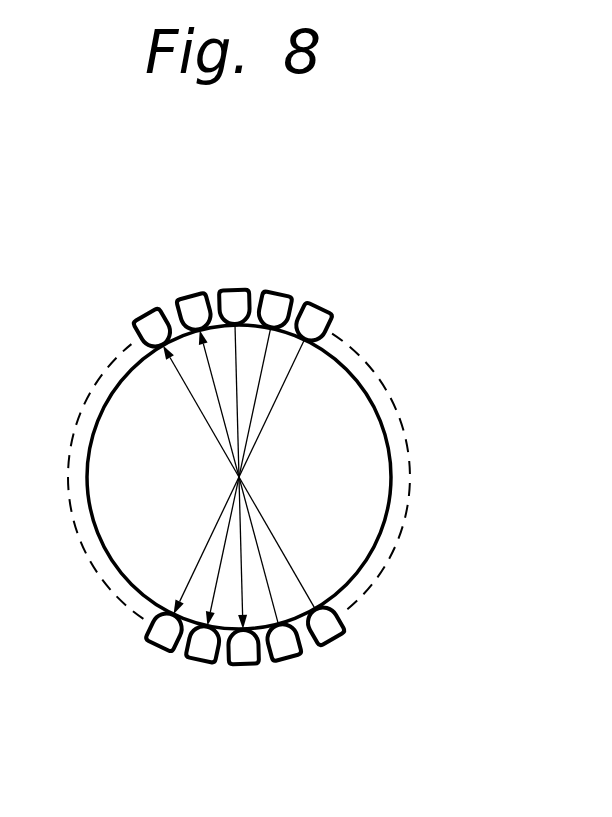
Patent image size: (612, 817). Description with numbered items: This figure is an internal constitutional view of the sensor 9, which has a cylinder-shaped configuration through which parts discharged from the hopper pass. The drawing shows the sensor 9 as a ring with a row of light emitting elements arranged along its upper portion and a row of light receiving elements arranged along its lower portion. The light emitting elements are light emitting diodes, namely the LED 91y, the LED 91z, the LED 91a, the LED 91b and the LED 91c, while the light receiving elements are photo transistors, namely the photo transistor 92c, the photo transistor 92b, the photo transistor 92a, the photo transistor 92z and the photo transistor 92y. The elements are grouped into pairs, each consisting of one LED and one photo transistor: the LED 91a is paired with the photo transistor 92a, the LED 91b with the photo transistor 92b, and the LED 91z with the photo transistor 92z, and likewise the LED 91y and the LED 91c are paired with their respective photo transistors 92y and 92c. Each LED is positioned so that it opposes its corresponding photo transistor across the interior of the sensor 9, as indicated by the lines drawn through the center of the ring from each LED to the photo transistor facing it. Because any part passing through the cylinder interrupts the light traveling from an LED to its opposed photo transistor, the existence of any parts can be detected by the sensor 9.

The sensor 9 is at (438, 355).
The light emitting diode (LED) 91y is at (148, 322).
The light emitting diode (LED) 91z is at (188, 307).
The light emitting diode (LED) 91a is at (235, 298).
The light emitting diode (LED) 91b is at (280, 300).
The light emitting diode (LED) 91c is at (318, 317).
The photo transistor 92c is at (162, 640).
The photo transistor 92b is at (205, 658).
The photo transistor 92a is at (243, 668).
The photo transistor 92z is at (288, 657).
The photo transistor 92y is at (325, 642).